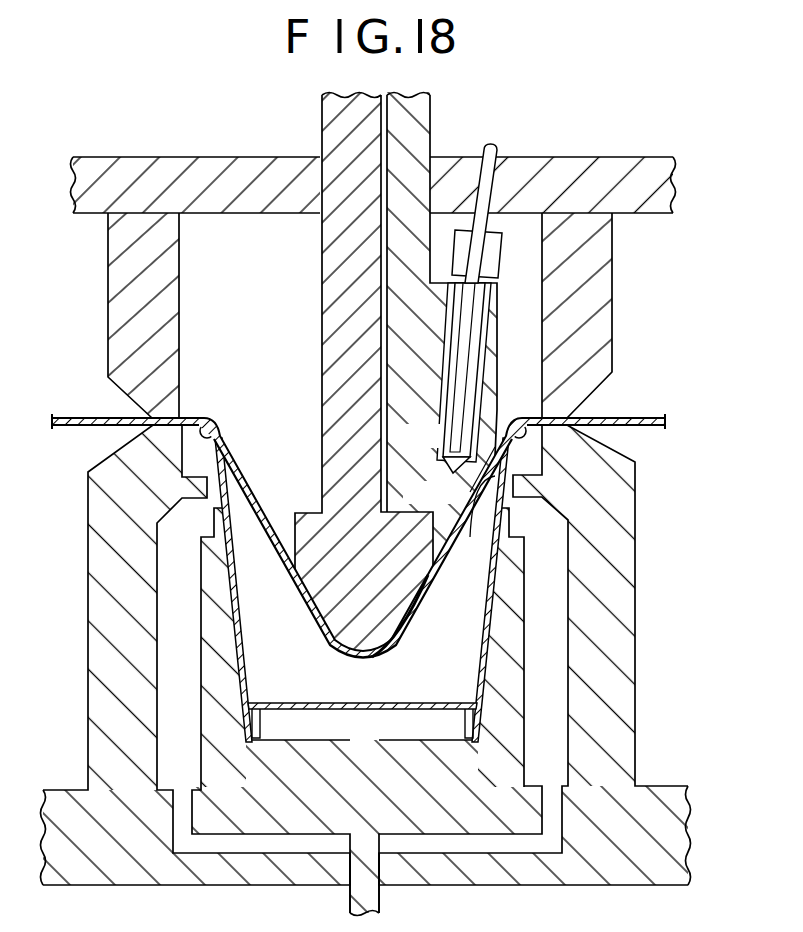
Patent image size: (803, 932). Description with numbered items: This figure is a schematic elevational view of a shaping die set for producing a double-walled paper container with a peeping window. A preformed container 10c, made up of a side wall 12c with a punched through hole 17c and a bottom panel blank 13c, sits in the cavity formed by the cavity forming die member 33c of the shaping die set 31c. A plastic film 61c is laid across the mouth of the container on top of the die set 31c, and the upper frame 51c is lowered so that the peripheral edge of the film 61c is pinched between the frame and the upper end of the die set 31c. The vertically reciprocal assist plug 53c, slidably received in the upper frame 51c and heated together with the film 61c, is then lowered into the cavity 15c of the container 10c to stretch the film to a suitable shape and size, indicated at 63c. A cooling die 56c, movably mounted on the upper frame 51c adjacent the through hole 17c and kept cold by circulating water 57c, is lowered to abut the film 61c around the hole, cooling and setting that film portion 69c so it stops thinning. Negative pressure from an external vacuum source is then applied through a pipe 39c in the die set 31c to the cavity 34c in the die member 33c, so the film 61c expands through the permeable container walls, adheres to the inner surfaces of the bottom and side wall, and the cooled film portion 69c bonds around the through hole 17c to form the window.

The preformed container 10c is at (250, 637).
The side wall 12c is at (486, 680).
The bottom panel blank 13c is at (310, 709).
The cavity 15c is at (460, 639).
The through hole 17c is at (433, 566).
The shaping die set 31c is at (620, 552).
The cavity forming die member 33c is at (515, 594).
The cavity 34c is at (421, 739).
The pipe 39c is at (370, 909).
The upper frame 51c is at (598, 301).
The assist plug 53c is at (392, 579).
The cooling die 56c is at (435, 449).
The water 57c is at (470, 285).
The plastic film 61c is at (627, 414).
The stretched film shape 63c is at (247, 468).
The film portion 69c is at (468, 491).